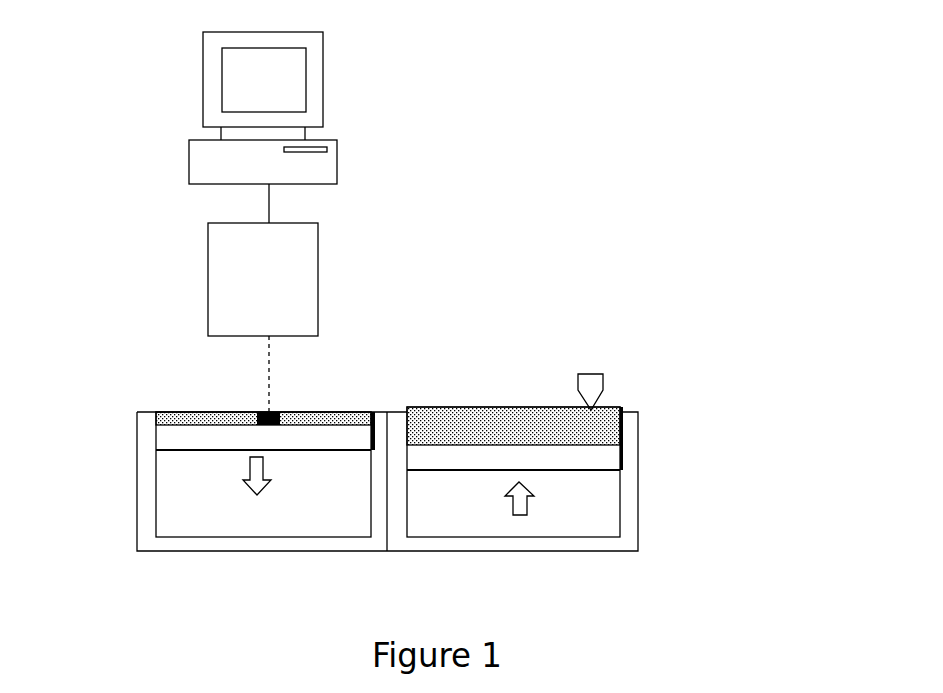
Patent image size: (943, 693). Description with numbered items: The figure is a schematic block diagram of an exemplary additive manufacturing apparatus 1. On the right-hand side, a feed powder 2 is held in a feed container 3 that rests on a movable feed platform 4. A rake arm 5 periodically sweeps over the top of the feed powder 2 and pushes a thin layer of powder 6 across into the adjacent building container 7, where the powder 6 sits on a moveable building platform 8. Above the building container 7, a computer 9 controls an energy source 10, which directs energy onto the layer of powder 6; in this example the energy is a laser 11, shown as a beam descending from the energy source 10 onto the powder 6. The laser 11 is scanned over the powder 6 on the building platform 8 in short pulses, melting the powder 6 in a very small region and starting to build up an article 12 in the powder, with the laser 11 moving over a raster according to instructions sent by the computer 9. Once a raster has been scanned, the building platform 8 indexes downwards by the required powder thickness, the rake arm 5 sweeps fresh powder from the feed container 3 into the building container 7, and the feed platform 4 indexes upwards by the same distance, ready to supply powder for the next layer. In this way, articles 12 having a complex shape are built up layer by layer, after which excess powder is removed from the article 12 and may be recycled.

The additive manufacturing apparatus 1 is at (584, 178).
The feed powder 2 is at (607, 435).
The feed container 3 is at (620, 542).
The movable feed platform 4 is at (613, 460).
The rake arm 5 is at (603, 383).
The layer of powder 6 is at (158, 422).
The building container 7 is at (145, 535).
The moveable building platform 8 is at (165, 440).
The computer 9 is at (320, 66).
The energy source 10 is at (318, 265).
The laser 11 is at (267, 362).
The article 12 is at (278, 412).